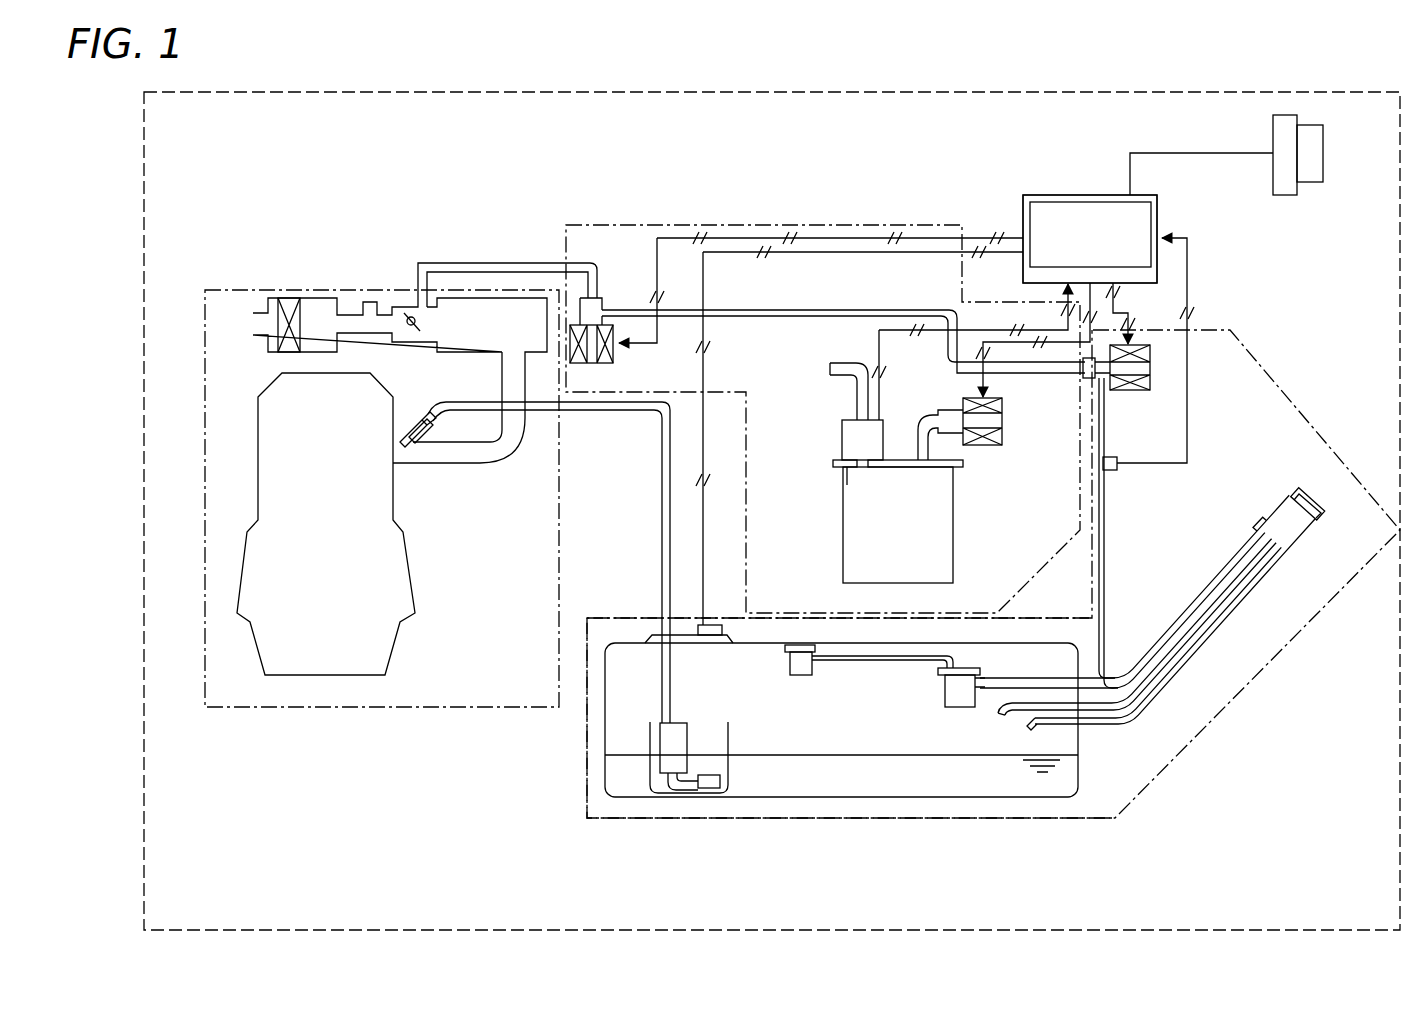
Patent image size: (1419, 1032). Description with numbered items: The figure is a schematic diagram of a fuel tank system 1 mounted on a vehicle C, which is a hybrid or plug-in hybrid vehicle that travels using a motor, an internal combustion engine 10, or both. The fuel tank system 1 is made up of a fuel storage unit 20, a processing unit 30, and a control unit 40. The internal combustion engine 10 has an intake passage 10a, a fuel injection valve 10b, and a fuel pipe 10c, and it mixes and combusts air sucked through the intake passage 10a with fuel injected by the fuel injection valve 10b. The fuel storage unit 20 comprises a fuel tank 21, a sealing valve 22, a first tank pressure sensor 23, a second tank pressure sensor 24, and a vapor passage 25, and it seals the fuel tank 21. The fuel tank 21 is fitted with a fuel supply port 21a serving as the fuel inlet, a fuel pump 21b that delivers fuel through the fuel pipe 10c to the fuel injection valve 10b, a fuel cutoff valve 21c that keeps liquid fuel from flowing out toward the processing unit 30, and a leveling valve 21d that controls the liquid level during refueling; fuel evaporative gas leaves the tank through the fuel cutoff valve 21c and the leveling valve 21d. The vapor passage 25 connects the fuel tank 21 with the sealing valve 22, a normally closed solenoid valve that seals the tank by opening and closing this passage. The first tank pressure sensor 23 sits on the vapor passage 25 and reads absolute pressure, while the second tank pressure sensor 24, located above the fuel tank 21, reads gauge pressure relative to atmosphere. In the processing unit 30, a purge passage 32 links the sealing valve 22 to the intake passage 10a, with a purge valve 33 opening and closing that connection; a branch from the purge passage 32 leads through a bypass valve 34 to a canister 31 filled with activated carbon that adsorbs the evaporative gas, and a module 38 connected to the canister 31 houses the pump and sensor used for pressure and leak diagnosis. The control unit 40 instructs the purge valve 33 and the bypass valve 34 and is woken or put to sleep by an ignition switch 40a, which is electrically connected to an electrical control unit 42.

The fuel tank system 1 is at (1280, 329).
The internal combustion engine 10 is at (385, 708).
The intake passage 10a is at (346, 298).
The fuel injection valve 10b is at (409, 421).
The fuel pipe 10c is at (608, 411).
The fuel storage unit 20 is at (818, 819).
The fuel tank 21 is at (928, 798).
The fuel supply port 21a is at (1325, 525).
The fuel pump 21b is at (690, 722).
The fuel cutoff valve 21c is at (801, 677).
The leveling valve 21d is at (945, 691).
The sealing valve 22 is at (1128, 392).
The first tank pressure sensor 23 is at (1112, 471).
The second tank pressure sensor 24 is at (712, 624).
The vapor passage 25 is at (1096, 556).
The processing unit 30 is at (836, 224).
The canister 31 is at (956, 488).
The purge passage 32 is at (773, 320).
The purge valve 33 is at (614, 356).
The bypass valve 34 is at (1003, 433).
The module 38 is at (842, 430).
The control unit 40 is at (1092, 195).
The ignition switch 40a is at (1325, 153).
The electrical control unit 42 is at (1158, 206).
The vehicle C is at (203, 199).